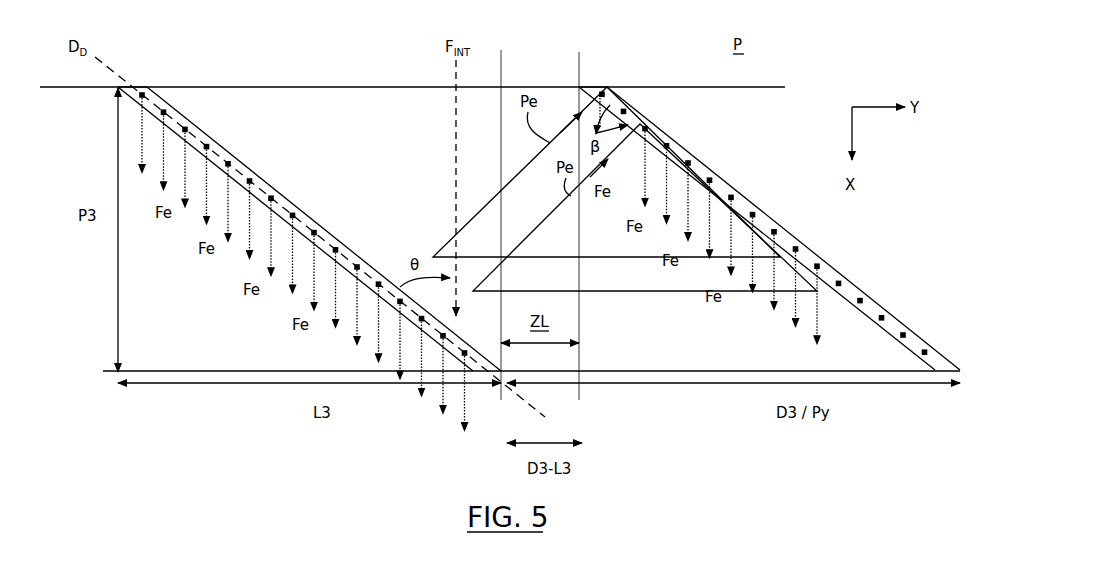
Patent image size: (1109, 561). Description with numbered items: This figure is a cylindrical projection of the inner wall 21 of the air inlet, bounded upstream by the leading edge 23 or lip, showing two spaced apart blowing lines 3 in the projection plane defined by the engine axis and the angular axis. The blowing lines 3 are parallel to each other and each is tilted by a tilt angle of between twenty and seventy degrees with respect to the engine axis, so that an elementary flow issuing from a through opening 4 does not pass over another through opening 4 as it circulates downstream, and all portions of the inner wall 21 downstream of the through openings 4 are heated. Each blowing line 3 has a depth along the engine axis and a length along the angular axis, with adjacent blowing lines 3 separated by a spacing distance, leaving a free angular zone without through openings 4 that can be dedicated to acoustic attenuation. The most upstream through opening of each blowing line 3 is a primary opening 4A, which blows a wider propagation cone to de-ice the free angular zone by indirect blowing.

The blowing line 3 is at (234, 137).
The through opening 4 is at (253, 172).
The primary opening 4A is at (147, 87).
The inner wall 21 is at (178, 326).
The leading edge 23 is at (358, 87).